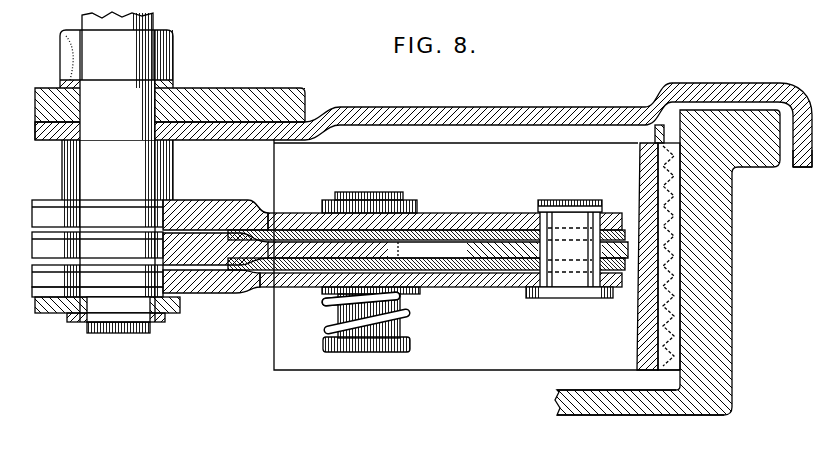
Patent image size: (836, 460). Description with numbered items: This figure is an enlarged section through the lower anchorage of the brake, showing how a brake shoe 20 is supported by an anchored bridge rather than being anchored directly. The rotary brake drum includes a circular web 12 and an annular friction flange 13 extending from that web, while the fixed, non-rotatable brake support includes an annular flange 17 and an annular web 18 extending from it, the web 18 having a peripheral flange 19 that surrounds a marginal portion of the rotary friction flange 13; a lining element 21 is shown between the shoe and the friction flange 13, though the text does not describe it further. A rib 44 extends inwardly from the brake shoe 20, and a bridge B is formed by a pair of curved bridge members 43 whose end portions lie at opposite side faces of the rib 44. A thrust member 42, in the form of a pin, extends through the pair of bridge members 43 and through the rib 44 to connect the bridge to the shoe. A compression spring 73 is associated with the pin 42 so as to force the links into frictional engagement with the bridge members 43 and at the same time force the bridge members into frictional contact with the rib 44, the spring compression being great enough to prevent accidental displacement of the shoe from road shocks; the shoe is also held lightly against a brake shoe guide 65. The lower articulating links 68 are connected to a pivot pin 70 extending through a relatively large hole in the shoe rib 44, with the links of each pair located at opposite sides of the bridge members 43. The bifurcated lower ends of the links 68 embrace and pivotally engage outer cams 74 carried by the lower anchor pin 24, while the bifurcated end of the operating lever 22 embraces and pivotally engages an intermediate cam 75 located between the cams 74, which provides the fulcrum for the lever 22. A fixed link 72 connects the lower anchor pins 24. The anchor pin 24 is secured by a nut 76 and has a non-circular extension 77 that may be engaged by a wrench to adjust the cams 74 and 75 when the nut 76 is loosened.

The web 12 is at (612, 405).
The friction flange 13 is at (727, 292).
The flange 17 is at (238, 92).
The web 18 is at (672, 85).
The peripheral flange 19 is at (798, 168).
The brake shoe 20 is at (510, 360).
The liner / packing 21 is at (670, 333).
The operating lever 22 is at (210, 258).
The anchor pin 24 is at (117, 176).
The thrust member 42 is at (368, 338).
The bridge member 43 is at (457, 232).
The rib 44 is at (507, 245).
The brake shoe guide 65 is at (628, 136).
The lower link 68 is at (433, 213).
The pivot pin 70 is at (565, 282).
The link 72 is at (52, 320).
The compression spring 73 is at (325, 328).
The cam 74 is at (97, 248).
The cam 75 is at (97, 245).
The nut 76 is at (116, 59).
The non-circular extension 77 is at (155, 20).
The bridge B is at (318, 233).